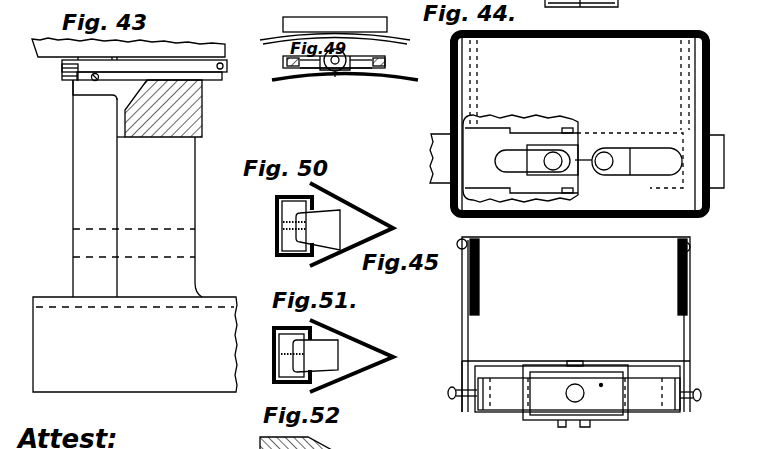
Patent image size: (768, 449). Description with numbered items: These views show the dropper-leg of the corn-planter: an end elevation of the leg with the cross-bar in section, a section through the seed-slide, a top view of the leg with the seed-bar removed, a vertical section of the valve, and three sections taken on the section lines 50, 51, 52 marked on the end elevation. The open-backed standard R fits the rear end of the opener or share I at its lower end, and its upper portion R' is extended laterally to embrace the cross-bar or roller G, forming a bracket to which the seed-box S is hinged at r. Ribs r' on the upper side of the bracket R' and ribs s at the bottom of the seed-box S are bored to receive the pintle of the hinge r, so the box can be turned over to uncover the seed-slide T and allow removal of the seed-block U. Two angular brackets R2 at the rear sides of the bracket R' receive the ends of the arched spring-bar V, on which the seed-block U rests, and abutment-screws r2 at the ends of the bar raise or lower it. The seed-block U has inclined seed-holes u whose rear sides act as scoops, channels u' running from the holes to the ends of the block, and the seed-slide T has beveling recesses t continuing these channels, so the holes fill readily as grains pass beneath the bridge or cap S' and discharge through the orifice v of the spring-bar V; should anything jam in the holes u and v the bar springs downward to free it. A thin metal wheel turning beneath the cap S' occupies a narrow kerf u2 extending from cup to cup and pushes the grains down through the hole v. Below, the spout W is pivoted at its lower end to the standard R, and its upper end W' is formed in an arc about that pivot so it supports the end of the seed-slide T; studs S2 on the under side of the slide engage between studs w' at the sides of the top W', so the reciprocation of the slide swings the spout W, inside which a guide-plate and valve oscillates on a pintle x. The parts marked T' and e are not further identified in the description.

In FIG. 43, the seed-box S is at (128, 40).
In FIG. 44, the bridge S' is at (580, 124).
In FIG. 43, the bracket R' is at (151, 92).
In FIG. 45, the bracket R' is at (576, 324).
In FIG. 43, the hinge r is at (157, 68).
In FIG. 45, the hinge r is at (573, 246).
In FIG. 45, the ribs r' is at (574, 293).
In FIG. 43, the seed-slide T is at (49, 81).
In FIG. 44, the trunnion T' is at (587, 161).
In FIG. 43, the eccentric e is at (95, 70).
In FIG. 43, the brackets R2 is at (100, 83).
In FIG. 45, the brackets R2 is at (578, 382).
In FIG. 45, the abutment-screws r2 is at (576, 392).
In FIG. 43, the cross-bar G is at (172, 108).
In FIG. 43, the spout W is at (95, 188).
In FIG. 50, the spout W is at (283, 226).
In FIG. 51, the spout W is at (292, 348).
In FIG. 45, the studs w' is at (573, 394).
In FIG. 50, the studs w' is at (281, 230).
In FIG. 45, the upper end of spout W' is at (577, 405).
In FIG. 43, the standard R is at (159, 217).
In FIG. 50, the standard R is at (351, 224).
In FIG. 51, the standard R is at (351, 356).
In FIG. 52, the standard R is at (323, 443).
In FIG. 43, the section line 50 is at (73, 229).
In FIG. 43, the section line 51 is at (73, 257).
In FIG. 43, the section line 52 is at (135, 312).
In FIG. 43, the opener I is at (135, 344).
In FIG. 49, the seed-block U is at (344, 36).
In FIG. 44, the seed-block U is at (601, 147).
In FIG. 49, the seed-hole u is at (347, 56).
In FIG. 44, the seed-hole u is at (553, 161).
In FIG. 49, the channels u' is at (328, 51).
In FIG. 44, the channels u' is at (569, 160).
In FIG. 44, the kerf u2 is at (605, 152).
In FIG. 49, the spring-bar V is at (338, 52).
In FIG. 45, the spring-bar V is at (579, 394).
In FIG. 49, the seed-hole of spring-bar v is at (332, 80).
In FIG. 45, the seed-hole of spring-bar v is at (584, 393).
In FIG. 49, the studs S2 is at (336, 79).
In FIG. 44, the inclined recesses t is at (572, 158).
In FIG. 45, the ribs s is at (578, 277).
In FIG. 50, the pintle x is at (318, 230).
In FIG. 51, the pintle x is at (309, 356).